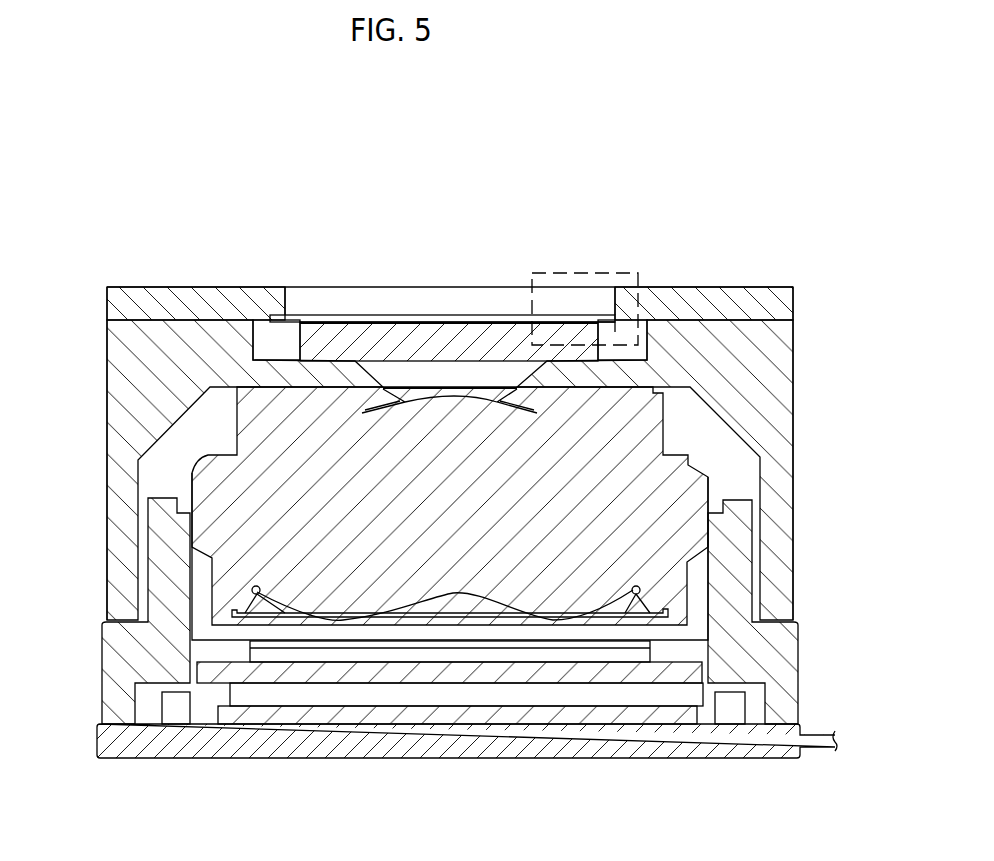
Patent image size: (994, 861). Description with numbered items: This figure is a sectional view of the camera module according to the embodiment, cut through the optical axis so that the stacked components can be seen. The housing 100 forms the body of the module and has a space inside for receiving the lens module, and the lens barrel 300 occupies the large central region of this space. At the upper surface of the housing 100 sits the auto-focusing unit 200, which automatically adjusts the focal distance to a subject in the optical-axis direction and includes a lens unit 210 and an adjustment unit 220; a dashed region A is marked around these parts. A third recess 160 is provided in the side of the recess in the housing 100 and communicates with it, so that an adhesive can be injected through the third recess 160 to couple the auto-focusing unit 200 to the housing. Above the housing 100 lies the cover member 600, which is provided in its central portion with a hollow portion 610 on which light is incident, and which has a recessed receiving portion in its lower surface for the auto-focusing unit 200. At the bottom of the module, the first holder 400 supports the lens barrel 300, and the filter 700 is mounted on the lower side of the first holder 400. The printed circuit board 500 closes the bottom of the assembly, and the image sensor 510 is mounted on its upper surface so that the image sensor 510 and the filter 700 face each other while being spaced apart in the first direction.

The housing 100 is at (120, 358).
The third recess 160 is at (268, 346).
The auto-focusing unit 200 is at (598, 222).
The lens unit 210 is at (518, 343).
The adjustment unit 220 is at (603, 323).
The lens barrel 300 is at (223, 494).
The first holder 400 is at (125, 655).
The printed circuit board 500 is at (333, 745).
The image sensor 510 is at (452, 716).
The cover member 600 is at (178, 307).
The hollow portion 610 is at (446, 305).
The filter 700 is at (572, 672).
The region A is at (640, 278).